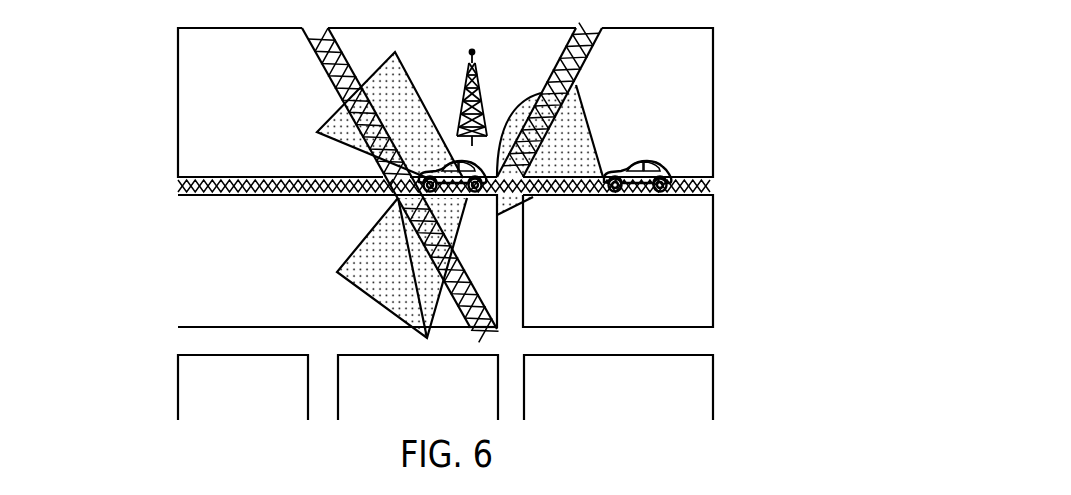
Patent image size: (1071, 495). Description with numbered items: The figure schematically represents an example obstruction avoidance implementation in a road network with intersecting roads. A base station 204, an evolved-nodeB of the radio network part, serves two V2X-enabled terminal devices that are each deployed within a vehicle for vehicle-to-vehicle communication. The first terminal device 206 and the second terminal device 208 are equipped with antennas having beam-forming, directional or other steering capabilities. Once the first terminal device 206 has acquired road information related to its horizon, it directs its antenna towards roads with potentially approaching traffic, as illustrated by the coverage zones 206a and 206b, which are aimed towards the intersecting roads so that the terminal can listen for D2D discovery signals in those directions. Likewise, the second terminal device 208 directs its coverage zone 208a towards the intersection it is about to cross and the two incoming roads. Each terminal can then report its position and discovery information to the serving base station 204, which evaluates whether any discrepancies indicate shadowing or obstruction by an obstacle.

The base station 204 is at (485, 108).
The first terminal device 206 is at (397, 198).
The antenna coverage zone 206a is at (337, 127).
The antenna coverage zone 206b is at (367, 280).
The second terminal device 208 is at (637, 192).
The antenna coverage zone 208a is at (585, 128).